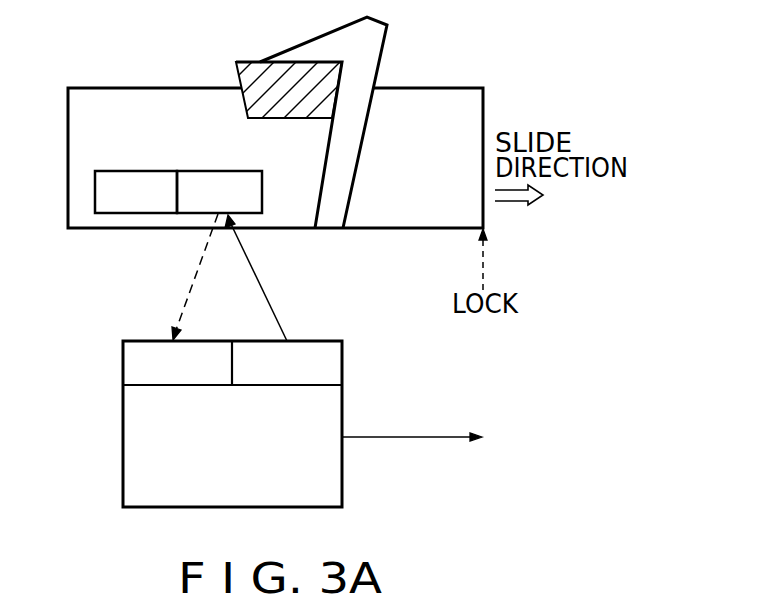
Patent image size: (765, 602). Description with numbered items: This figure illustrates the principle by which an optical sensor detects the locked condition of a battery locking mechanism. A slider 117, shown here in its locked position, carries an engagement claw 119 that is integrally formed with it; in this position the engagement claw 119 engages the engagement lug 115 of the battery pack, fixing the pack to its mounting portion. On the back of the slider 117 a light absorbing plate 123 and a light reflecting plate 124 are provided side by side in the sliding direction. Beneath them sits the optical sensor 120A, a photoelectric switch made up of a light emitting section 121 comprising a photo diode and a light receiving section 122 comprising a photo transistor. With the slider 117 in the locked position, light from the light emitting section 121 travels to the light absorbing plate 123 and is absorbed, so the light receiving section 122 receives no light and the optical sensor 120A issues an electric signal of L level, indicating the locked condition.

The engagement lug 115 is at (252, 61).
The slider 117 is at (484, 89).
The engagement claw 119 is at (387, 28).
The optical sensor 120A is at (272, 424).
The light emitting section 121 is at (343, 366).
The light receiving section 122 is at (133, 365).
The light absorbing plate 123 is at (205, 170).
The light reflecting plate 124 is at (128, 170).